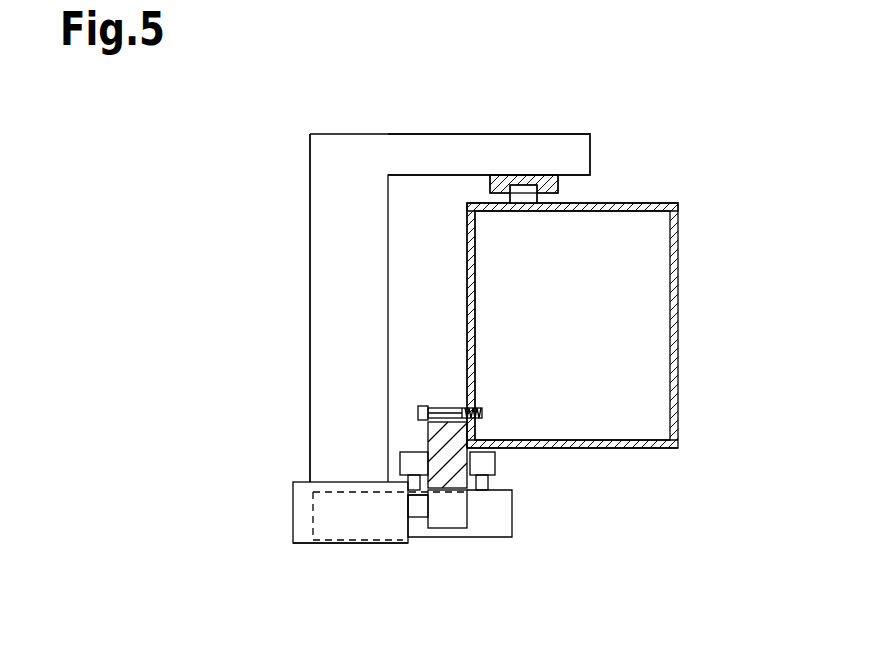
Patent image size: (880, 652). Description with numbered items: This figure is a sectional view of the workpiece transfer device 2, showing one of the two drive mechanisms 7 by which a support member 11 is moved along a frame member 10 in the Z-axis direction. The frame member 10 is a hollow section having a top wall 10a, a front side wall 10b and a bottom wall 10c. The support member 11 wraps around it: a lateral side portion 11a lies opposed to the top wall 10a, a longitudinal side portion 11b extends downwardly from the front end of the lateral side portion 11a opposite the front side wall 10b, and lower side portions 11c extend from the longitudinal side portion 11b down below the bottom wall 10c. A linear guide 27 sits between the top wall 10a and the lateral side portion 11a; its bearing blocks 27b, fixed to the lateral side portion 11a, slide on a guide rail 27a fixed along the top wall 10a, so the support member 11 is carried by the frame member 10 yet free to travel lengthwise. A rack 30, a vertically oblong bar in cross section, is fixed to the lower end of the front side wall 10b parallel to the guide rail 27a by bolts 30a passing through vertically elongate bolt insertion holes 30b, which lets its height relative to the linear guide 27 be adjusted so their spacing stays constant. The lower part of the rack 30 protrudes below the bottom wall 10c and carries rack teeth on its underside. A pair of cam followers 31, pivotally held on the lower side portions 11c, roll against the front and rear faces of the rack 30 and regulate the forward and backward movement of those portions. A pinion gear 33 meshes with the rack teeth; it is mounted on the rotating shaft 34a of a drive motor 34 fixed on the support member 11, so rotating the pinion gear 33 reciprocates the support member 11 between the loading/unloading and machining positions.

The workpiece transfer device 2 is at (321, 100).
The drive mechanism 7 is at (302, 556).
The frame member 10 is at (683, 232).
The top wall 10a is at (678, 203).
The front side wall 10b is at (467, 262).
The bottom wall 10c is at (657, 447).
The support member 11 is at (306, 196).
The lateral side portion 11a is at (461, 134).
The longitudinal side portion 11b is at (310, 222).
The lower side portion 11c is at (490, 537).
The linear guide 27 is at (598, 76).
The guide rail 27a is at (540, 198).
The bearing block 27b is at (556, 185).
The rack 30 is at (428, 435).
The bolt 30a is at (420, 408).
The bolt insertion hole 30b is at (447, 406).
The cam follower 31 is at (400, 463).
The pinion gear 33 is at (455, 528).
The drive motor 34 is at (340, 545).
The rotating shaft 34a is at (418, 540).